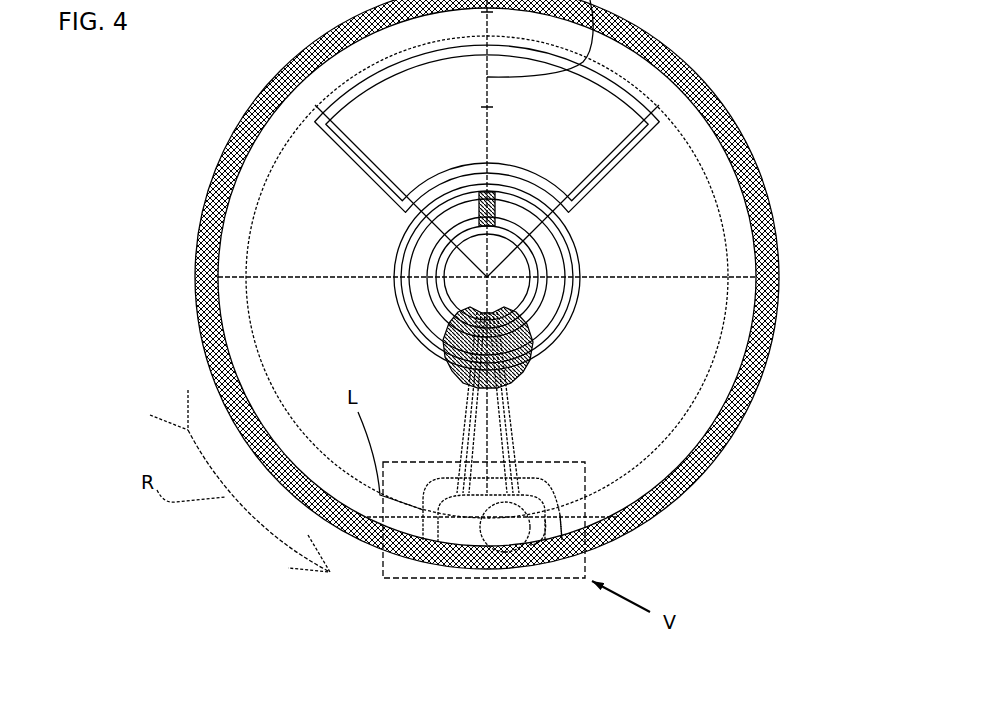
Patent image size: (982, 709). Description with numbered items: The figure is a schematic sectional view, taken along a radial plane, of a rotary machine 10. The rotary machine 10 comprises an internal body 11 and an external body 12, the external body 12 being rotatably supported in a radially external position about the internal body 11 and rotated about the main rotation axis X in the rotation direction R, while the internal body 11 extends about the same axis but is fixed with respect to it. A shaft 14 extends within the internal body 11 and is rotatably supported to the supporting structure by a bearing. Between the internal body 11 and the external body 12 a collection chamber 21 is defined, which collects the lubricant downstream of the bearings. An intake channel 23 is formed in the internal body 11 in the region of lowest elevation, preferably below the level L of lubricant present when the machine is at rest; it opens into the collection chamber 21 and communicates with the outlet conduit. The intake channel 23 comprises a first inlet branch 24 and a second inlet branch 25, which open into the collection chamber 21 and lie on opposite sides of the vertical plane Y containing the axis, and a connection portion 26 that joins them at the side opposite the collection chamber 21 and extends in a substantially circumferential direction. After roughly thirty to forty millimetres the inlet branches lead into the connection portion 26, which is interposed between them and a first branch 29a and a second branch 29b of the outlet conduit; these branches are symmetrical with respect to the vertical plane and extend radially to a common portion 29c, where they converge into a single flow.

The rotary machine 10 is at (143, 225).
The internal body 11 is at (746, 320).
The external body 12 is at (744, 130).
The shaft 14 is at (518, 254).
The collection chamber 21 is at (534, 507).
The intake channel 23 is at (540, 520).
The first inlet branch 24 is at (437, 538).
The second inlet branch 25 is at (530, 545).
The connection portion 26 is at (510, 543).
The first branch of the outlet conduit 29a is at (470, 400).
The second branch of the outlet conduit 29b is at (500, 400).
The common portion of the outlet conduit 29c is at (532, 340).